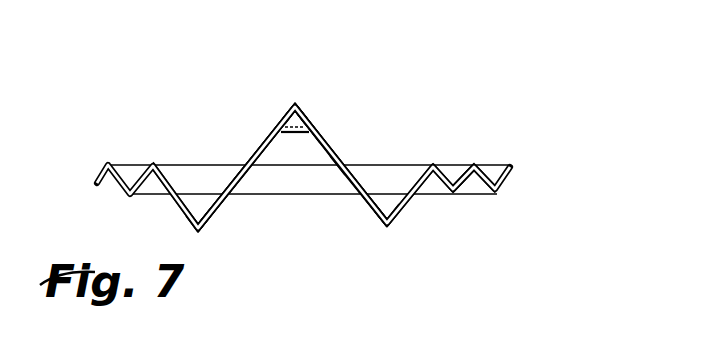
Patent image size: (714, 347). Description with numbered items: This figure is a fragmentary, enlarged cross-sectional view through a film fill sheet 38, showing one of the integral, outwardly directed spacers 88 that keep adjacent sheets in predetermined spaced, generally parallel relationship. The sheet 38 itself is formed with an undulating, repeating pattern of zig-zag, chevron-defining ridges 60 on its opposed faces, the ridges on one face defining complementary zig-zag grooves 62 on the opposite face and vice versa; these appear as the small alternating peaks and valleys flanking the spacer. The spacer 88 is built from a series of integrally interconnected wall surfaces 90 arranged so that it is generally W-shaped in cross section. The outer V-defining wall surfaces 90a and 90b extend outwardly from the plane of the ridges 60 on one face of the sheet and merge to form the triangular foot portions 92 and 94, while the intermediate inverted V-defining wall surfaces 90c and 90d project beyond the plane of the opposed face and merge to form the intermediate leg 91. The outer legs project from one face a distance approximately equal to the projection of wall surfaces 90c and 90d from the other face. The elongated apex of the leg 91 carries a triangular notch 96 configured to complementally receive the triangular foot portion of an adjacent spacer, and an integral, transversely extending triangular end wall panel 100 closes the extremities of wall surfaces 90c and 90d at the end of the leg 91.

The film fill sheet 38 is at (527, 163).
The ridge 60 is at (473, 166).
The groove 62 is at (453, 184).
The spacer 88 is at (271, 115).
The wall surface 90 is at (235, 160).
The outer V-defining wall surface 90a is at (190, 212).
The outer V-defining wall surface 90b is at (221, 208).
The intermediate inverted V-defining wall surface 90c is at (252, 155).
The intermediate inverted V-defining wall surface 90d is at (332, 157).
The intermediate leg 91 is at (331, 124).
The foot portion 92 is at (213, 230).
The foot portion 94 is at (374, 228).
The notch 96 is at (293, 110).
The end wall panel 100 is at (313, 170).